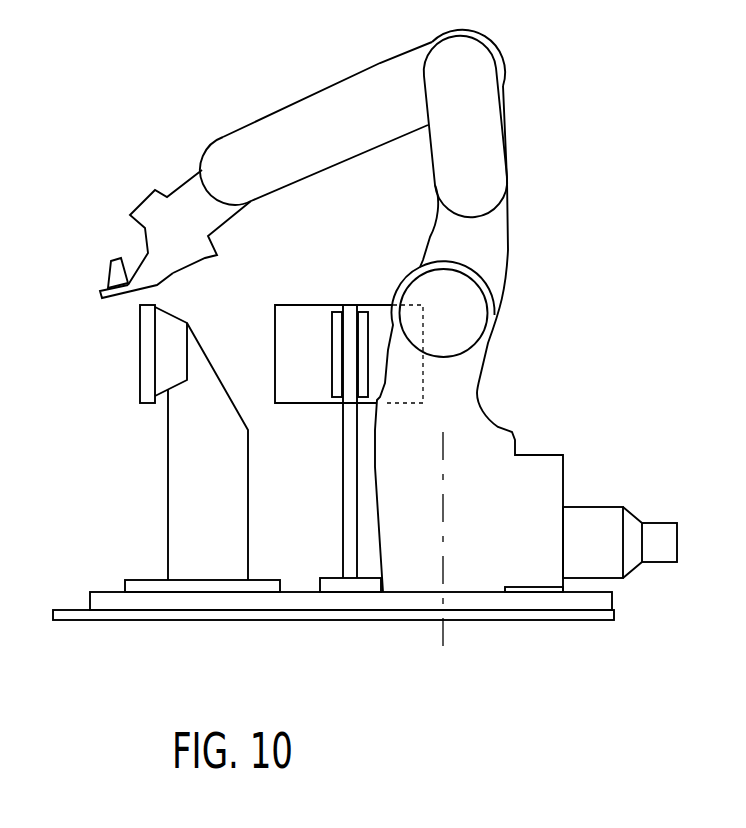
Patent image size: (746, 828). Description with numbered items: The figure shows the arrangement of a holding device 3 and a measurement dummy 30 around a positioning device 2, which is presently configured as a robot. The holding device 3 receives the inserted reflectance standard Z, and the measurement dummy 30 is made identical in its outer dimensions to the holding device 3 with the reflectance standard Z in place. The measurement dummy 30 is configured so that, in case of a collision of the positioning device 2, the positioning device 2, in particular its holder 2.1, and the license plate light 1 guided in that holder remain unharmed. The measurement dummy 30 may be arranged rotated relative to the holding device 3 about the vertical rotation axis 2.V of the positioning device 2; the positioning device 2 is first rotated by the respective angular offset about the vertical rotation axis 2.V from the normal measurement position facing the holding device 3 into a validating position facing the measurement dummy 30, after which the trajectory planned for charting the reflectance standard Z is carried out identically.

The license plate light 1 is at (107, 272).
The positioning device 2 is at (528, 51).
The holder 2.1 is at (147, 235).
The vertical rotation axis 2.V is at (447, 564).
The holding device 3 is at (178, 476).
The measurement dummy 30 is at (333, 304).
The reflectance standard Z is at (138, 367).